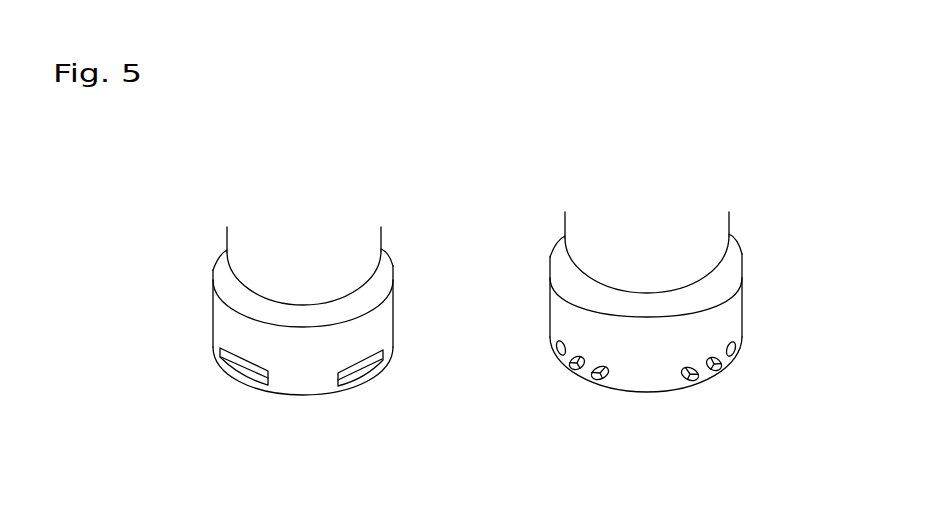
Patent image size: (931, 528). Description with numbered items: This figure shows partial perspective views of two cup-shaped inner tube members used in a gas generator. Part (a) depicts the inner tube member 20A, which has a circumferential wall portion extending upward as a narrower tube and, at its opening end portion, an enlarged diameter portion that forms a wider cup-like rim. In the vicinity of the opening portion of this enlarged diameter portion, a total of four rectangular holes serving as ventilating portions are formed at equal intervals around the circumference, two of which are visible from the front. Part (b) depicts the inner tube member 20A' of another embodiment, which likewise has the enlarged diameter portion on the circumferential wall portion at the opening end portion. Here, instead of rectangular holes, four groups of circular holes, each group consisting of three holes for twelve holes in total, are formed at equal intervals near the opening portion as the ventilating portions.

The inner tube member 20A is at (306, 329).
The inner tube member 20A' is at (647, 320).